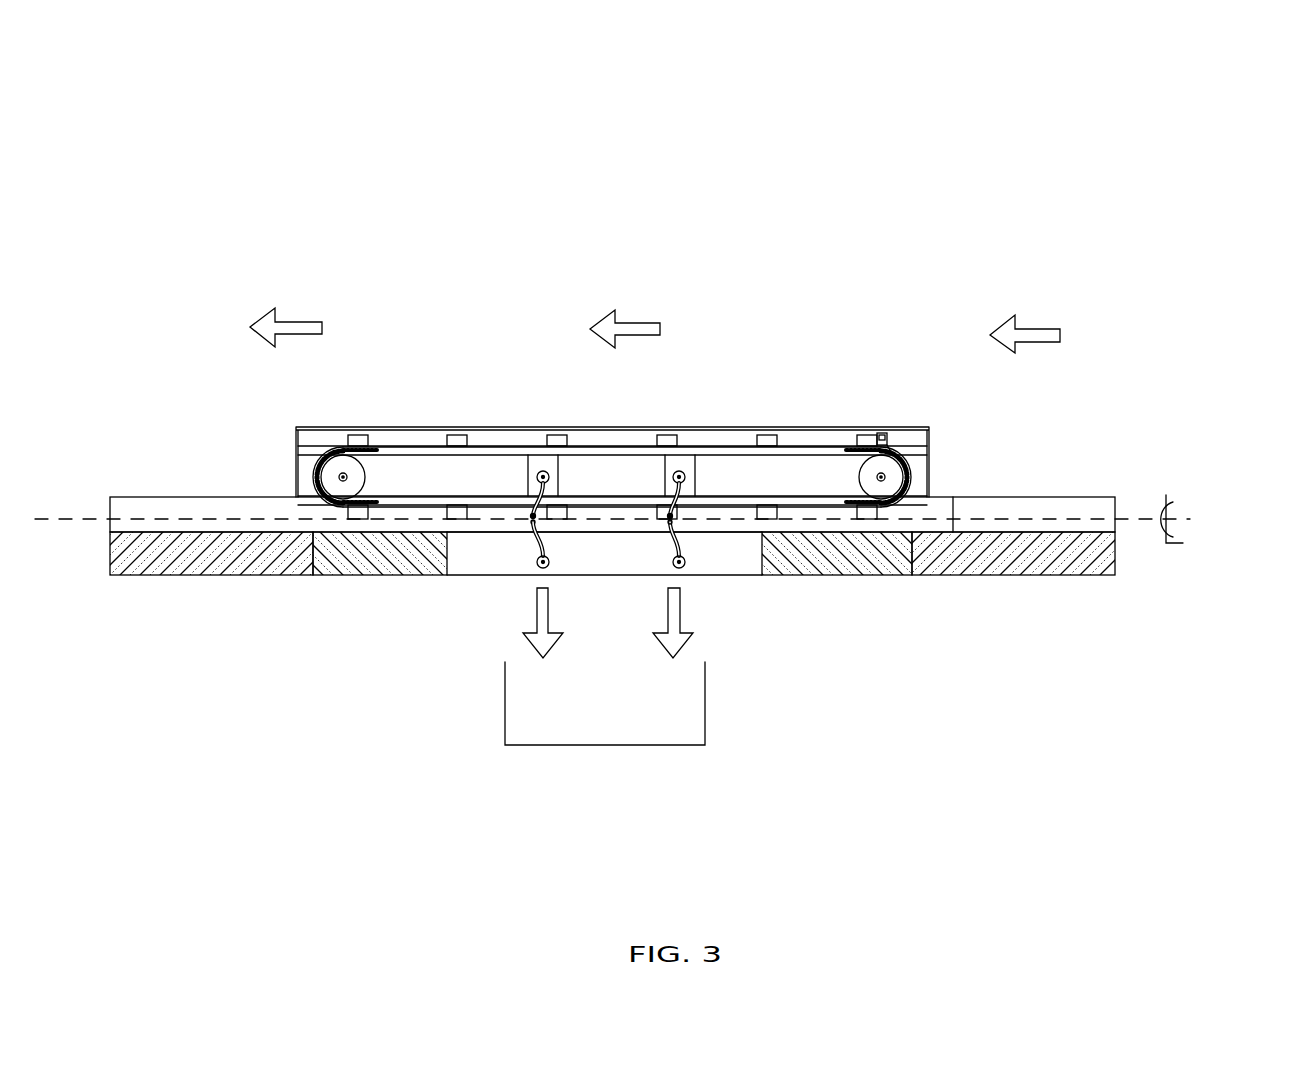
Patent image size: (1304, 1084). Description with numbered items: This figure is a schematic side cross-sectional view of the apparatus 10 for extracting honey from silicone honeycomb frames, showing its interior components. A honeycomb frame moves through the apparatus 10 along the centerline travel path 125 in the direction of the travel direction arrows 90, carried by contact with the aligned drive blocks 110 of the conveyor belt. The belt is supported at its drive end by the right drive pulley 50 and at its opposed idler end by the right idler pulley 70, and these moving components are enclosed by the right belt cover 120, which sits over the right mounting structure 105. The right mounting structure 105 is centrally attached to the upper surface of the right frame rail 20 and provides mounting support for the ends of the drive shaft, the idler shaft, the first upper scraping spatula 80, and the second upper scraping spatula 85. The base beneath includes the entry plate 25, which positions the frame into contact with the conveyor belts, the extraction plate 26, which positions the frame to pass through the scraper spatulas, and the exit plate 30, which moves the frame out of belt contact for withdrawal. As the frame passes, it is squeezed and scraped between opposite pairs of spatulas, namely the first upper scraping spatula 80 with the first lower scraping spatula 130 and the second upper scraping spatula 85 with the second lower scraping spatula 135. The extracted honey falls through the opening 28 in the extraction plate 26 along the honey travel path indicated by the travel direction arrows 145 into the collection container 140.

The apparatus 10 is at (189, 211).
The right frame rail 20 is at (1017, 495).
The entry plate 25 is at (1067, 577).
The extraction plate 26 is at (398, 577).
The opening 28 is at (495, 574).
The exit plate 30 is at (207, 576).
The right drive pulley 50 is at (332, 468).
The right idler pulley 70 is at (893, 467).
The first upper scraping spatula 80 is at (682, 485).
The second upper scraping spatula 85 is at (547, 487).
The travel direction arrows 90 is at (302, 320).
The right mounting structure 105 is at (528, 470).
The drive blocks 110 is at (450, 442).
The right belt cover 120 is at (333, 427).
The centerline travel path 125 is at (1180, 512).
The first lower scraping spatula 130 is at (682, 538).
The second lower scraping spatula 135 is at (547, 543).
The collection container 140 is at (503, 692).
The travel direction arrows 145 is at (537, 608).